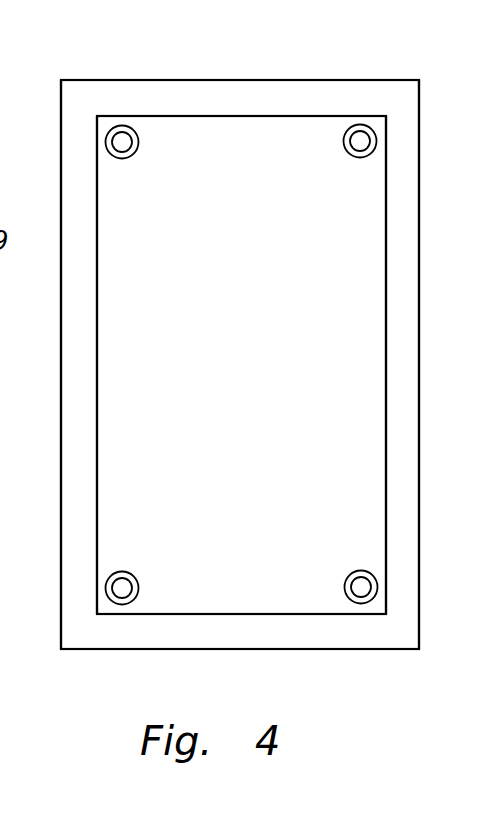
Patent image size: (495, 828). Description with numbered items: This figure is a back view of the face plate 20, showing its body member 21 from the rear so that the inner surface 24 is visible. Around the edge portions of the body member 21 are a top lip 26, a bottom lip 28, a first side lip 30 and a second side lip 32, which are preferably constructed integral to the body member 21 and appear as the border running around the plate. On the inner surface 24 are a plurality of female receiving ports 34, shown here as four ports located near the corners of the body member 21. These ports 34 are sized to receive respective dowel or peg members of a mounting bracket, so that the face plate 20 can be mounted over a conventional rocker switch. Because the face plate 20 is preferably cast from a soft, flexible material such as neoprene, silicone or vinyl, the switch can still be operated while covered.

The face plate 20 is at (198, 378).
The body member 21 is at (165, 80).
The inner surface 24 is at (130, 363).
The top lip 26 is at (288, 97).
The bottom lip 28 is at (178, 635).
The first side lip 30 is at (78, 448).
The second side lip 32 is at (402, 383).
The female receiving ports 34 is at (105, 143).